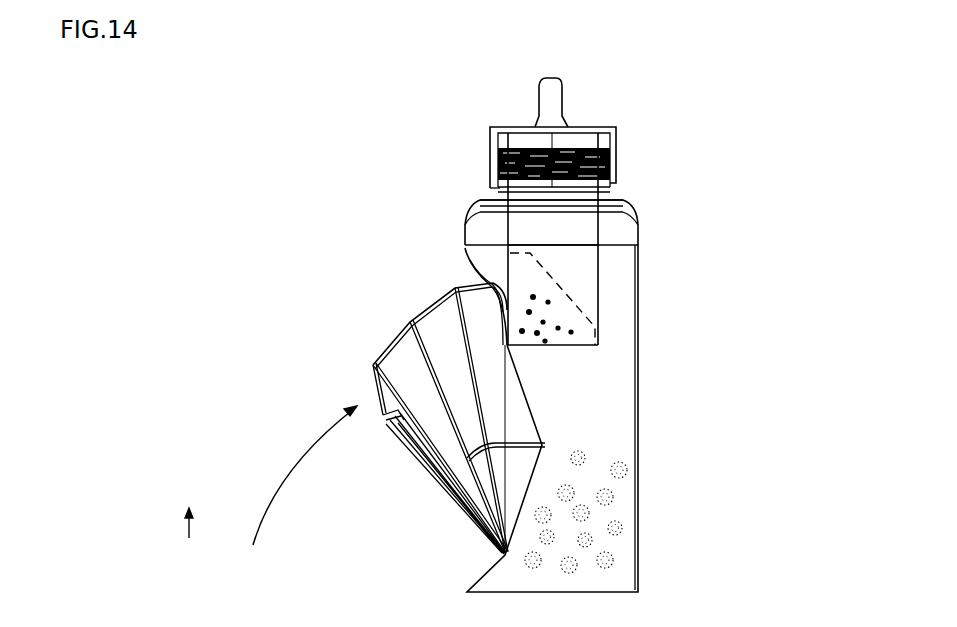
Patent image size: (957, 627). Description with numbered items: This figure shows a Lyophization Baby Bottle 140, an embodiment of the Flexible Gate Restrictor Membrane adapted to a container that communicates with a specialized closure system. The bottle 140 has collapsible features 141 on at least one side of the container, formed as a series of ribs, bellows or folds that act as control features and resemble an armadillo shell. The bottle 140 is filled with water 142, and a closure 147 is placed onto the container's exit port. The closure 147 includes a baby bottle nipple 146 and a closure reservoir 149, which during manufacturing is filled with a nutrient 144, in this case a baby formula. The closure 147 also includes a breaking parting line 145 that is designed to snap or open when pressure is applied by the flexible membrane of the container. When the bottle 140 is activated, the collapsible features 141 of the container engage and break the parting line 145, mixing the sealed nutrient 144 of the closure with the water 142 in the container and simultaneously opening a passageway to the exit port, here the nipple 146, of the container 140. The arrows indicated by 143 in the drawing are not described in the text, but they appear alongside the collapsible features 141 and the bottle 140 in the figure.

The Lyophization Baby Bottle 140 is at (270, 145).
The collapsible features 141 is at (408, 305).
The water 142 is at (600, 520).
The flow direction 143 is at (271, 488).
The nutrient 144 is at (585, 328).
The breaking parting line 145 is at (573, 292).
The baby bottle nipple 146 is at (578, 110).
The closure 147 is at (485, 148).
The closure reservoir 149 is at (580, 227).